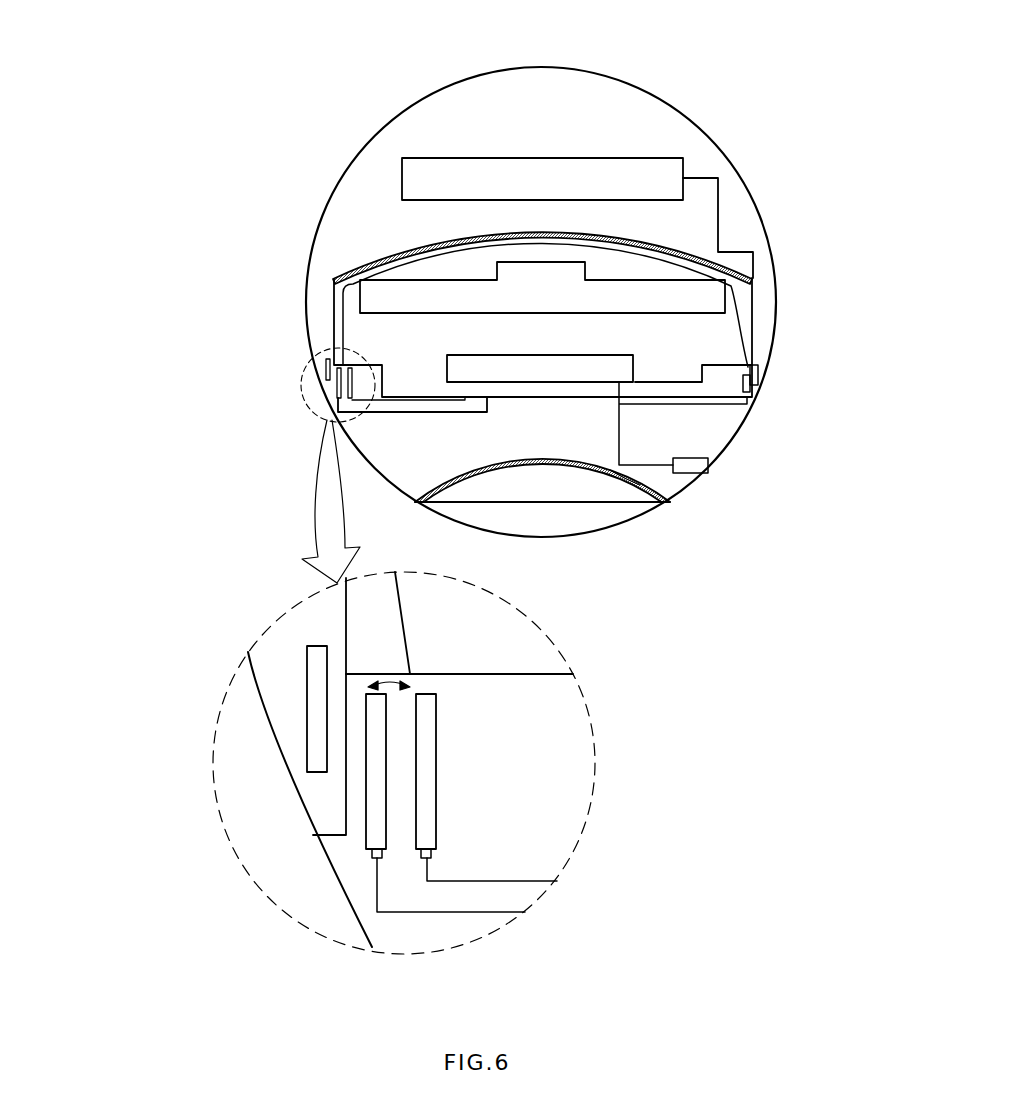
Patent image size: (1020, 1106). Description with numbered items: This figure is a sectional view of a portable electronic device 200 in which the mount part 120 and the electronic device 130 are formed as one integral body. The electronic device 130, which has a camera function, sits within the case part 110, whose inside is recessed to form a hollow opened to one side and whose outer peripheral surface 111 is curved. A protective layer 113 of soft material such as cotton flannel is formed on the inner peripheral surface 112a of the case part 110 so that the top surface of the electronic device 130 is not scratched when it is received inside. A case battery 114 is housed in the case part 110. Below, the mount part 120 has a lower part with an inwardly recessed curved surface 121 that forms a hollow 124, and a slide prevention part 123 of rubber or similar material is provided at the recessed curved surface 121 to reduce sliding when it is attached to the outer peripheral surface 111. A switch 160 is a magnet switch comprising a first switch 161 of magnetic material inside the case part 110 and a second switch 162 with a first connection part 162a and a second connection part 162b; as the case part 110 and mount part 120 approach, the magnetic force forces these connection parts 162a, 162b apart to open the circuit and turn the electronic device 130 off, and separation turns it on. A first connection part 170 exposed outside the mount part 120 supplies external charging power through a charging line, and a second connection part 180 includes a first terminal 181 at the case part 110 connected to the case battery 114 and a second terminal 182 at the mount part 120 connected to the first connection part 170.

The portable electronic device 200 is at (316, 52).
The case part 110 is at (702, 111).
The outer peripheral surface 111 is at (617, 77).
The inner peripheral surface 112a is at (667, 245).
The protective layer 113 is at (730, 263).
The case battery 114 is at (683, 160).
The mount part 120 is at (758, 428).
The recessed curved surface 121 is at (541, 468).
The slide prevention part 123 is at (616, 481).
The hollow 124 is at (515, 490).
The electronic device 130 is at (330, 313).
The switch 160 is at (87, 822).
The first switch 161 is at (317, 748).
The second switch 162 is at (146, 799).
The first connection part 162a is at (372, 793).
The second connection part 162b is at (427, 836).
The first connection part 170 is at (710, 466).
The second connection part 180 is at (862, 355).
The first terminal 181 is at (759, 372).
The second terminal 182 is at (752, 388).